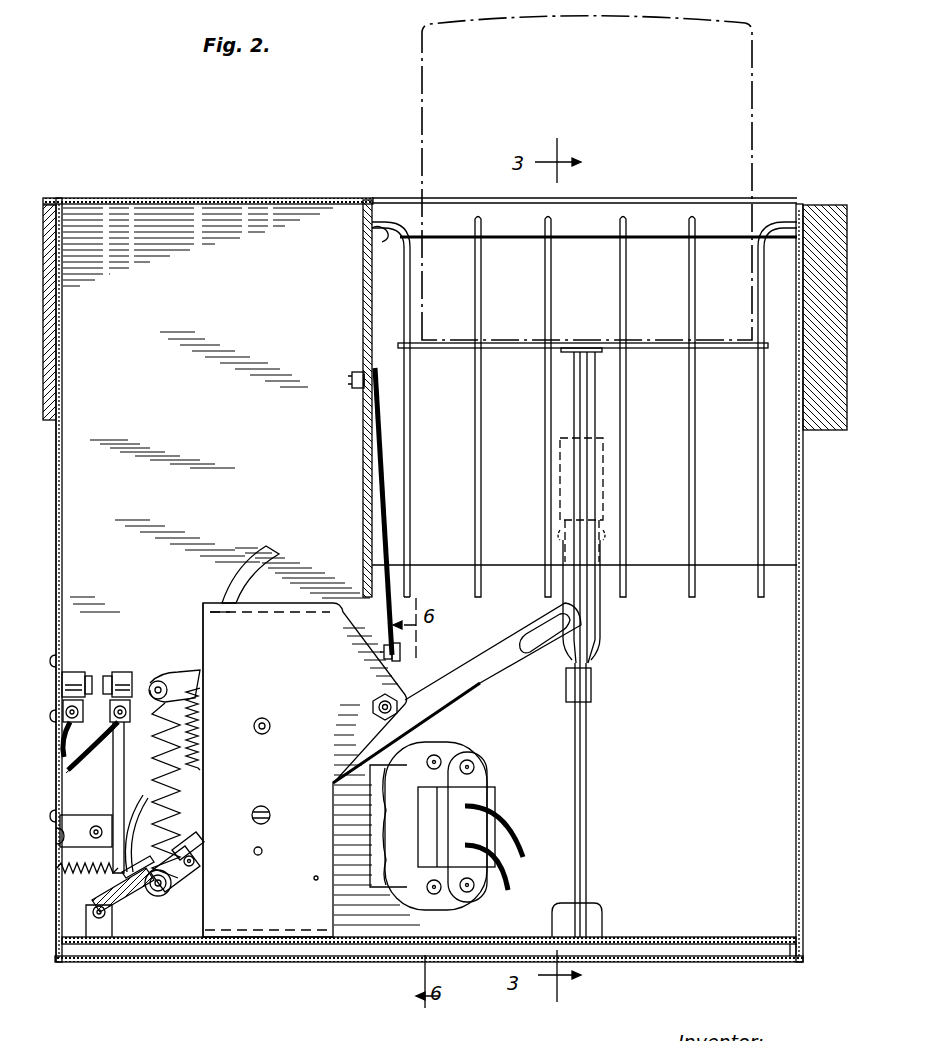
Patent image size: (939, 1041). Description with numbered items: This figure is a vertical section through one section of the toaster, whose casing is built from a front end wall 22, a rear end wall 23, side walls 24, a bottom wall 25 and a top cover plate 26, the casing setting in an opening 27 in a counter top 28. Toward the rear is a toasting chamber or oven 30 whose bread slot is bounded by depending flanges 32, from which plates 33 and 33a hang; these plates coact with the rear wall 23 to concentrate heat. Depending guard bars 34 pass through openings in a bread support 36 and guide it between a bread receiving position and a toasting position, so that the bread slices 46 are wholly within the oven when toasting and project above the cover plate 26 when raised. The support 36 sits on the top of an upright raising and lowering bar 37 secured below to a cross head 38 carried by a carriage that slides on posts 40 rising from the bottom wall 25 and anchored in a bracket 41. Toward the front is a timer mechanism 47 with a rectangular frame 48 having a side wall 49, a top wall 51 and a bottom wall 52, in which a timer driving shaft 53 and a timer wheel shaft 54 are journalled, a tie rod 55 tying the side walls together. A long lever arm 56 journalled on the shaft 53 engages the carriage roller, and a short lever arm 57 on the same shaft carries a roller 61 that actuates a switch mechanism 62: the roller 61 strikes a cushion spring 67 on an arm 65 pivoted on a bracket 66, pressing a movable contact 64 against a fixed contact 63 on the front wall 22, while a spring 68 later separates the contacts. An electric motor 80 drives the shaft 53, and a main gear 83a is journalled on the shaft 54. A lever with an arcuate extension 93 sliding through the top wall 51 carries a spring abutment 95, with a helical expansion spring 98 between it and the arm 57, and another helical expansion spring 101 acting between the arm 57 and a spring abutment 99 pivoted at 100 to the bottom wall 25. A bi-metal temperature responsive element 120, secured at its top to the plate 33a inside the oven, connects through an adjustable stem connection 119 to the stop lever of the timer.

The front end wall 22 is at (62, 500).
The rear end wall 23 is at (796, 663).
The side wall 24 is at (207, 439).
The bottom wall 25 is at (228, 960).
The top cover plate 26 is at (222, 198).
The opening 27 is at (62, 310).
The counter top 28 is at (46, 375).
The toasting chamber 30 is at (382, 350).
The depending flanges 32 is at (368, 242).
The plate 33 is at (493, 566).
The plate 33a is at (365, 521).
The guard bars 34 is at (476, 433).
The bread support 36 is at (646, 346).
The raising and lowering bar 37 is at (590, 657).
The cross head 38 is at (598, 672).
The post 40 is at (590, 748).
The bracket 41 is at (603, 468).
The bread slices 46 is at (755, 98).
The timer mechanism 47 is at (192, 616).
The rectangular frame 48 is at (316, 878).
The side wall 49 is at (305, 770).
The top wall 51 is at (218, 603).
The bottom wall 52 is at (256, 928).
The timer driving shaft 53 is at (270, 820).
The timer wheel shaft 54 is at (270, 722).
The tie rod 55 is at (256, 855).
The lever arm 56 is at (466, 673).
The lever arm 57 is at (180, 890).
The roller 61 is at (160, 897).
The switch mechanism 62 is at (119, 645).
The fixed contact 63 is at (90, 653).
The movable contact 64 is at (108, 672).
The arm 65 is at (124, 761).
The bracket 66 is at (93, 816).
The cushion spring 67 is at (141, 801).
The spring 68 is at (70, 876).
The electric motor 80 is at (492, 756).
The main gear 83a is at (205, 701).
The arcuate extension 93 is at (262, 569).
The spring abutment 95 is at (172, 680).
The helical expansion spring 98 is at (162, 776).
The spring abutment 99 is at (112, 918).
The pivot 100 is at (93, 913).
The helical expansion spring 101 is at (128, 870).
The adjustable stem connection 119 is at (398, 661).
The temperature responsive element 120 is at (376, 468).